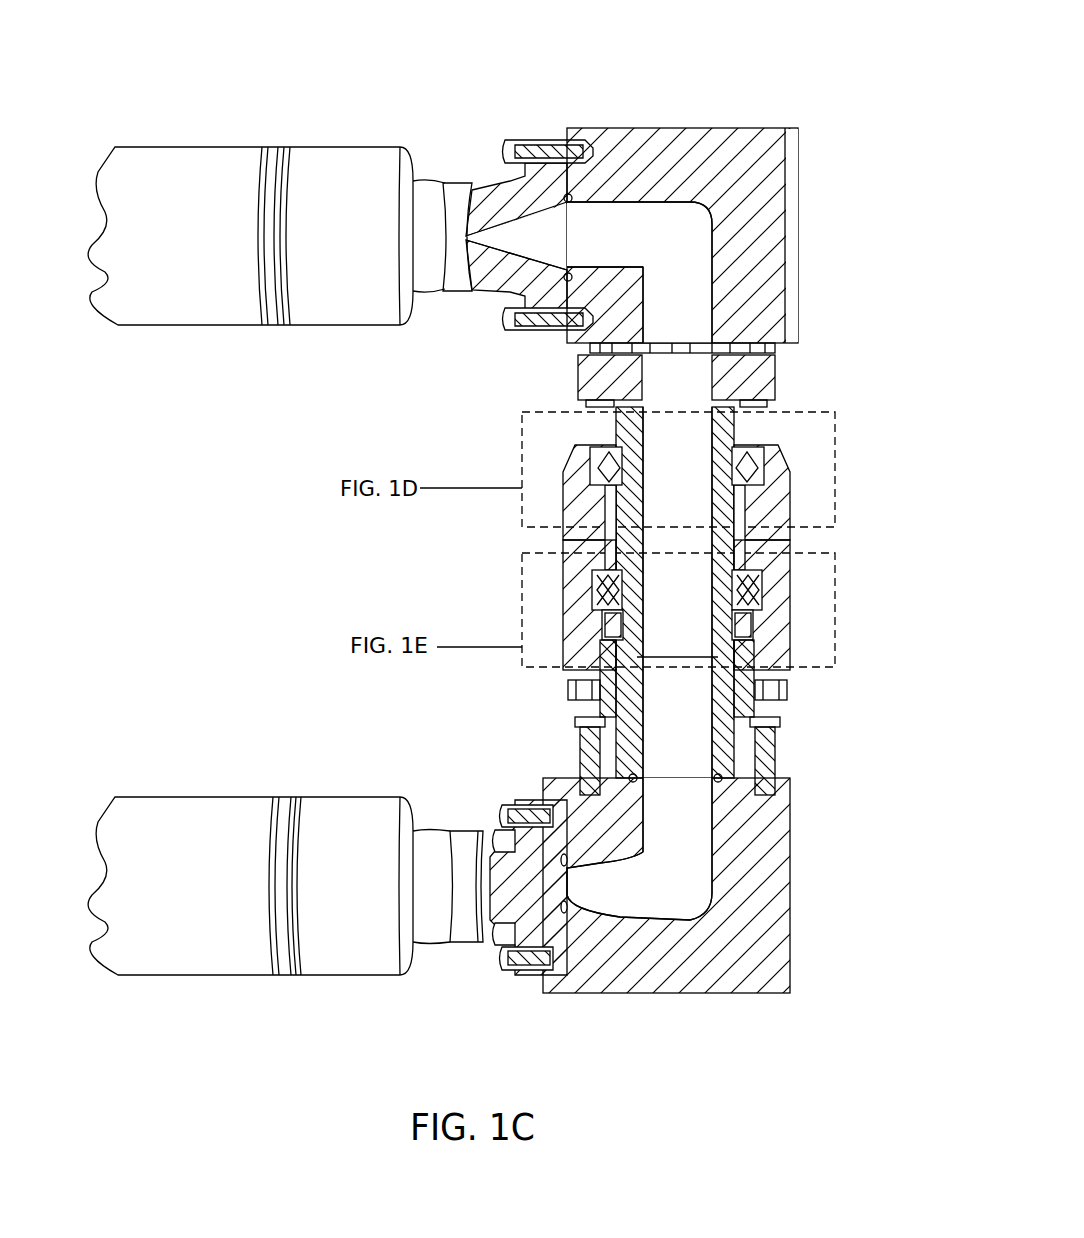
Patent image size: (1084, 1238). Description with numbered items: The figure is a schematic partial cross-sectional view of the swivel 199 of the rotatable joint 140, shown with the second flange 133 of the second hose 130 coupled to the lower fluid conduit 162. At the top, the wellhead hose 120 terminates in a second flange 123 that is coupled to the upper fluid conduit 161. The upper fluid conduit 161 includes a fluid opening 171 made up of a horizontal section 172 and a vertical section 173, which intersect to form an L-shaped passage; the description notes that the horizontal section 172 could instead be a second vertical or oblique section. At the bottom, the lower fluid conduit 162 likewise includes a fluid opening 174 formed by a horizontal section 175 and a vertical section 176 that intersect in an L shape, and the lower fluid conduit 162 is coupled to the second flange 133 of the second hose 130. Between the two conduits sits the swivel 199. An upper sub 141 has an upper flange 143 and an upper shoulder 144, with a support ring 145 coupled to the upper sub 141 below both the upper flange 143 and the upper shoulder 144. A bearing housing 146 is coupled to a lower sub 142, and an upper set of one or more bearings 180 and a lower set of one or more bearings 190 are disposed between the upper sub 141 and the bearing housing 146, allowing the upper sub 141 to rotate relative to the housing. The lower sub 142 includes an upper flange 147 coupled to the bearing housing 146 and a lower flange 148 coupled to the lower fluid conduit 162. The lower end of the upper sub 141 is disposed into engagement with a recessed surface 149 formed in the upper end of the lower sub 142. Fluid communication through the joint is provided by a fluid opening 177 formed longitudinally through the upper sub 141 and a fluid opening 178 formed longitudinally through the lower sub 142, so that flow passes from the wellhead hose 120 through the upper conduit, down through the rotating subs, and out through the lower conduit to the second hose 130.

The wellhead hose 120 is at (186, 313).
The second hose 130 is at (178, 832).
The second flange 123 is at (548, 140).
The second flange 133 is at (538, 935).
The upper fluid conduit 161 is at (748, 233).
The lower fluid conduit 162 is at (753, 883).
The fluid opening 171 is at (706, 192).
The horizontal section 172 is at (622, 220).
The vertical section 173 is at (680, 297).
The fluid opening 174 is at (693, 923).
The horizontal section 175 is at (635, 903).
The vertical section 176 is at (700, 830).
The fluid opening 177 is at (670, 432).
The fluid opening 178 is at (690, 708).
The rotatable joint 140 is at (822, 404).
The upper sub 141 is at (745, 427).
The lower sub 142 is at (727, 670).
The upper flange 143 is at (742, 375).
The upper shoulder 144 is at (612, 428).
The support ring 145 is at (740, 627).
The bearing housing 146 is at (580, 548).
The upper flange 147 is at (575, 648).
The lower flange 148 is at (612, 760).
The recessed surface 149 is at (737, 665).
The bearings 180 is at (597, 468).
The bearings 190 is at (600, 580).
The swivel 199 is at (527, 543).